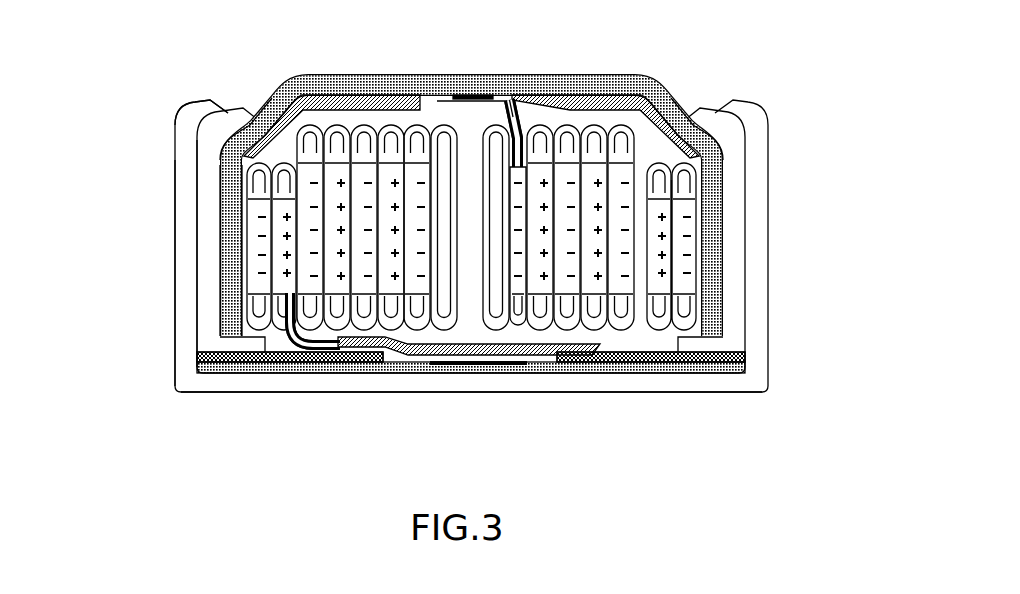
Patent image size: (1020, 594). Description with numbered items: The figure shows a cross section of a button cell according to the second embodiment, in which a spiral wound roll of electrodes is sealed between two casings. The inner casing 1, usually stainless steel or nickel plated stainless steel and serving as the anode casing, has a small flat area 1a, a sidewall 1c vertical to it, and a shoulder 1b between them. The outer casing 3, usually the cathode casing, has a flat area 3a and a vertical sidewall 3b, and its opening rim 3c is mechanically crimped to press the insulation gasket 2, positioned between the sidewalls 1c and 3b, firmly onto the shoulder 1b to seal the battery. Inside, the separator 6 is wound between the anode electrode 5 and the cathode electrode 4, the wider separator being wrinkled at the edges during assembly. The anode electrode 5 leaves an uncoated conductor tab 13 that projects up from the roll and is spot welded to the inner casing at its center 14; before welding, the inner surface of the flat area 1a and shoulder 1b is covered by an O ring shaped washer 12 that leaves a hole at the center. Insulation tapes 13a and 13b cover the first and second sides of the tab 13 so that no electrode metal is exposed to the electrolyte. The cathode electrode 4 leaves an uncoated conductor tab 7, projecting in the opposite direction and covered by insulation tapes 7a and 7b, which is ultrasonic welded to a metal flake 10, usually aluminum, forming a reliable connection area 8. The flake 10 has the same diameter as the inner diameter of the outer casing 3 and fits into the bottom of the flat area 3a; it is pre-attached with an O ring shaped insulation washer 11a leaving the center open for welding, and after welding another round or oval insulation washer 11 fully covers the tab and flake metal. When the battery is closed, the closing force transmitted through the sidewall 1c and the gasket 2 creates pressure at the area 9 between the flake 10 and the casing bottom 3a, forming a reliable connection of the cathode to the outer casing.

The inner casing 1 is at (310, 93).
The flat area 1a is at (412, 92).
The shoulder 1b is at (242, 140).
The sidewall 1c is at (227, 258).
The insulation gasket 2 is at (208, 195).
The outer casing 3 is at (188, 217).
The flat area 3a is at (240, 385).
The sidewall 3b is at (187, 287).
The opening rim 3c is at (188, 143).
The cathode electrode 4 is at (653, 210).
The anode electrode 5 is at (680, 242).
The separator 6 is at (667, 275).
The conductor tab 7 is at (290, 332).
The insulation tape 7a is at (310, 344).
The insulation tape 7b is at (337, 348).
The connection area 8 is at (452, 365).
The pressure area 9 is at (722, 372).
The metal flake 10 is at (688, 367).
The insulation washer 11 is at (570, 350).
The insulation washer 11a is at (280, 360).
The washer 12 is at (687, 145).
The conductor tab 13 is at (520, 122).
The insulation tape 13a is at (522, 136).
The insulation tape 13b is at (520, 108).
The spot weld connection 14 is at (505, 98).